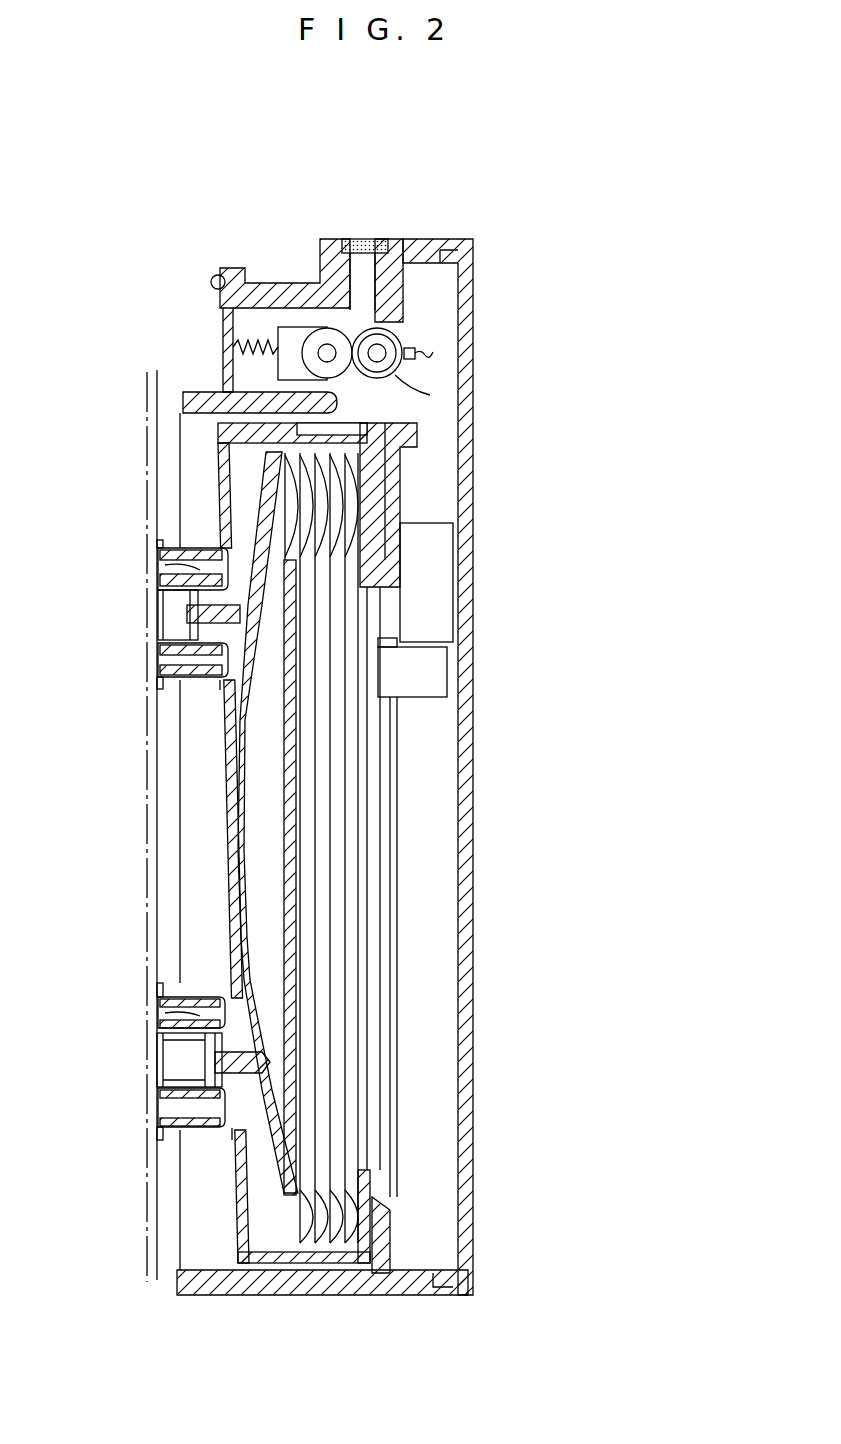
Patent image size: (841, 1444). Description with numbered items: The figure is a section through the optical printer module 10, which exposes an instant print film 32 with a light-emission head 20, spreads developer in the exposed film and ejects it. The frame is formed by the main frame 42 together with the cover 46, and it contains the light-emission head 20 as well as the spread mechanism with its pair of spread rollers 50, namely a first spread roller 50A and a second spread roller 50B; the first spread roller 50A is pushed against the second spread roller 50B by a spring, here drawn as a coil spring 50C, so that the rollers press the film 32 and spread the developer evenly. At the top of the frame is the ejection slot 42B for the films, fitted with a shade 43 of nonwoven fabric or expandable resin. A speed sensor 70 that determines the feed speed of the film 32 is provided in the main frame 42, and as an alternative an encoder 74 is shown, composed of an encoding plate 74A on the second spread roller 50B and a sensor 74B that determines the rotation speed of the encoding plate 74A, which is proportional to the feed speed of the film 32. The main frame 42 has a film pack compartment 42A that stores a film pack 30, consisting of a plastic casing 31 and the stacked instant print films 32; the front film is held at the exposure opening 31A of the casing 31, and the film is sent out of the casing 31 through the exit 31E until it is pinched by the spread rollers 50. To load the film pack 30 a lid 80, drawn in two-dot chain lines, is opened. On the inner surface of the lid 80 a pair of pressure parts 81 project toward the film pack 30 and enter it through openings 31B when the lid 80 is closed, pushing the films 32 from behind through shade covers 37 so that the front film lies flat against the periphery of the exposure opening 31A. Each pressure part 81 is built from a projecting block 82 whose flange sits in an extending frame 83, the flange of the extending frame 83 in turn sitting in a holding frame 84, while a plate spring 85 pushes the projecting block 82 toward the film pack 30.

The optical printer module 10 is at (493, 704).
The light-emission head 20 is at (452, 540).
The film pack 30 is at (218, 740).
The casing 31 is at (236, 1178).
The exposure opening 31A is at (367, 1168).
The openings 31B is at (220, 682).
The exit 31E is at (365, 448).
The instant print film 32 is at (345, 773).
The shade cover 37 is at (243, 877).
The main frame 42 is at (290, 280).
The film pack compartment 42A is at (193, 1242).
The ejection slot 42B is at (365, 280).
The shade 43 is at (351, 240).
The cover 46 is at (482, 327).
The spread rollers 50 is at (369, 296).
The first spread roller 50A is at (345, 340).
The second spread roller 50B is at (395, 340).
The biasing spring 50C is at (240, 337).
The speed sensor 70 is at (440, 658).
The encoder 74 is at (514, 400).
The encoding plate 74A is at (430, 395).
The sensor 74B is at (418, 357).
The lid 80 is at (147, 410).
The pressure parts 81 is at (164, 811).
The projecting block 82 is at (187, 603).
The extending frame 83 is at (197, 568).
The holding frame 84 is at (185, 560).
The plate spring 85 is at (173, 628).